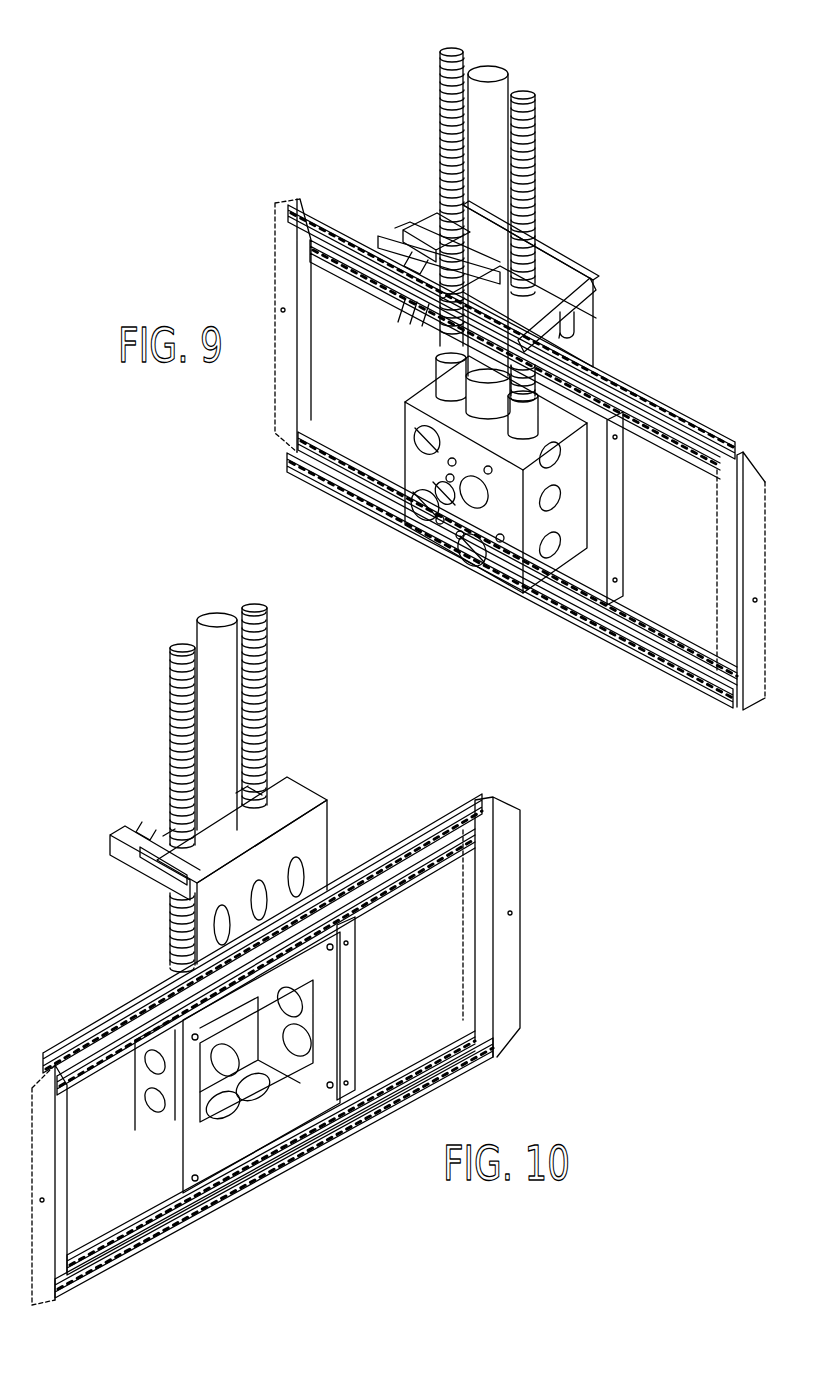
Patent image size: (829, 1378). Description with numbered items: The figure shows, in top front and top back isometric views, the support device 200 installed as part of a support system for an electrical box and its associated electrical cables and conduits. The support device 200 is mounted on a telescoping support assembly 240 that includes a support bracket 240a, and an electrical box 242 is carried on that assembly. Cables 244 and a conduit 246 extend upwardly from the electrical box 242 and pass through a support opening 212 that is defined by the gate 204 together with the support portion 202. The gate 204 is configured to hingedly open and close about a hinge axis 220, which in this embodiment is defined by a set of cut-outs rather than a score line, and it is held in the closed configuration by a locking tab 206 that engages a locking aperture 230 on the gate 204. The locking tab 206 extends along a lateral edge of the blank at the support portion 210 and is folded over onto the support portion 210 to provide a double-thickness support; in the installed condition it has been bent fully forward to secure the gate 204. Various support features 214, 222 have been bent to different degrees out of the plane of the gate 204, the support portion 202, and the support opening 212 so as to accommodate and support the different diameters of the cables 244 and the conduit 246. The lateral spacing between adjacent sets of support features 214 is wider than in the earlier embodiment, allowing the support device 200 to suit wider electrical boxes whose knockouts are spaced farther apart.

In FIG. 9, the support device 200 is at (509, 257).
In FIG. 10, the support device 200 is at (241, 842).
In FIG. 9, the support portion 202 is at (568, 276).
In FIG. 10, the support portion 202 is at (292, 780).
In FIG. 9, the gate 204 is at (418, 258).
In FIG. 10, the gate 204 is at (143, 822).
In FIG. 9, the locking tab 206 is at (412, 237).
In FIG. 9, the support portion 210 is at (596, 306).
In FIG. 10, the support portion 210 is at (328, 850).
In FIG. 9, the support opening 212 is at (432, 228).
In FIG. 10, the support opening 212 is at (148, 860).
In FIG. 9, the support features 214 is at (578, 322).
In FIG. 10, the support features 214 is at (177, 852).
In FIG. 9, the hinge axis 220 is at (500, 306).
In FIG. 10, the hinge axis 220 is at (115, 835).
In FIG. 9, the support features 222 is at (408, 327).
In FIG. 10, the support features 222 is at (168, 838).
In FIG. 9, the locking aperture 230 is at (392, 236).
In FIG. 10, the telescoping support assembly 240 is at (512, 788).
In FIG. 9, the support bracket 240a is at (620, 486).
In FIG. 10, the support bracket 240a is at (352, 983).
In FIG. 9, the electrical box 242 is at (447, 547).
In FIG. 10, the electrical box 242 is at (140, 1087).
In FIG. 9, the cables 244 is at (452, 52).
In FIG. 10, the cables 244 is at (181, 650).
In FIG. 9, the conduit 246 is at (490, 76).
In FIG. 10, the conduit 246 is at (213, 632).